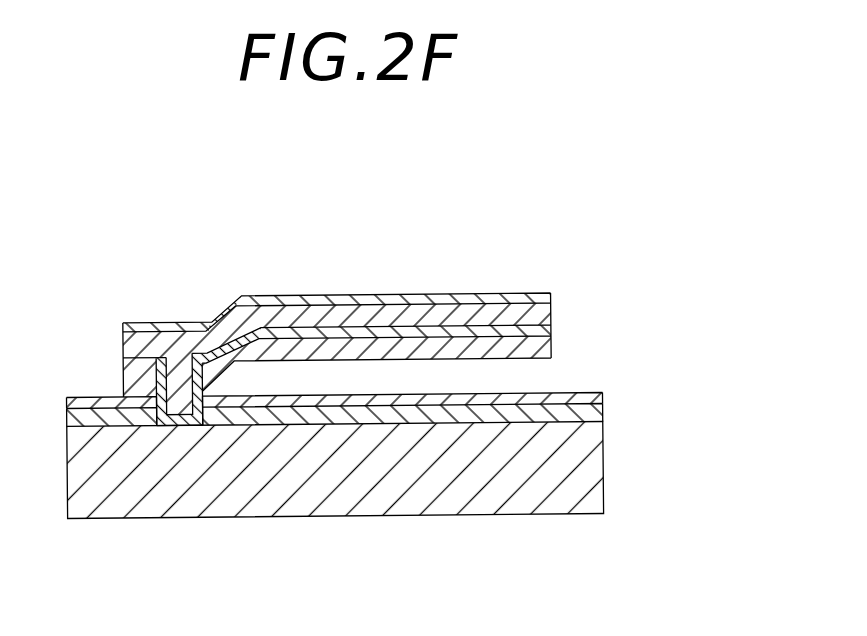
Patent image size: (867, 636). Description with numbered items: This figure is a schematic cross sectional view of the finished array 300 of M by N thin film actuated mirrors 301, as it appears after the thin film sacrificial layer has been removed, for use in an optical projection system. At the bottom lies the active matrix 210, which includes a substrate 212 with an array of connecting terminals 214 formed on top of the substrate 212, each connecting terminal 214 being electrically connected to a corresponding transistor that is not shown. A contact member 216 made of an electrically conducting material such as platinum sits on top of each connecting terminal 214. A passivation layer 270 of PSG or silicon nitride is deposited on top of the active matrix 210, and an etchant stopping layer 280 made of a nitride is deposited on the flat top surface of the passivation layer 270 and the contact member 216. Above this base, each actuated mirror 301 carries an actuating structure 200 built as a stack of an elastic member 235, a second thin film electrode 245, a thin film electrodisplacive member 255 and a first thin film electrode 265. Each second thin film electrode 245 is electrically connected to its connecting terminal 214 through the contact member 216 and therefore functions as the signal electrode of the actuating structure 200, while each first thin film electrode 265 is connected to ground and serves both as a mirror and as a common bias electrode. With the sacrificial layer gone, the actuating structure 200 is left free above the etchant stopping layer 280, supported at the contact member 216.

The array of thin film actuated mirrors 300 is at (627, 128).
The thin film actuated mirror 301 is at (550, 178).
The actuating structure 200 is at (567, 304).
The active matrix 210 is at (615, 425).
The substrate 212 is at (330, 482).
The connecting terminal 214 is at (185, 424).
The contact member 216 is at (158, 324).
The elastic member 235 is at (503, 349).
The second thin film electrode 245 is at (390, 331).
The thin film electrodisplacive member 255 is at (313, 318).
The first thin film electrode 265 is at (233, 296).
The passivation layer 270 is at (590, 416).
The etchant stopping layer 280 is at (590, 400).